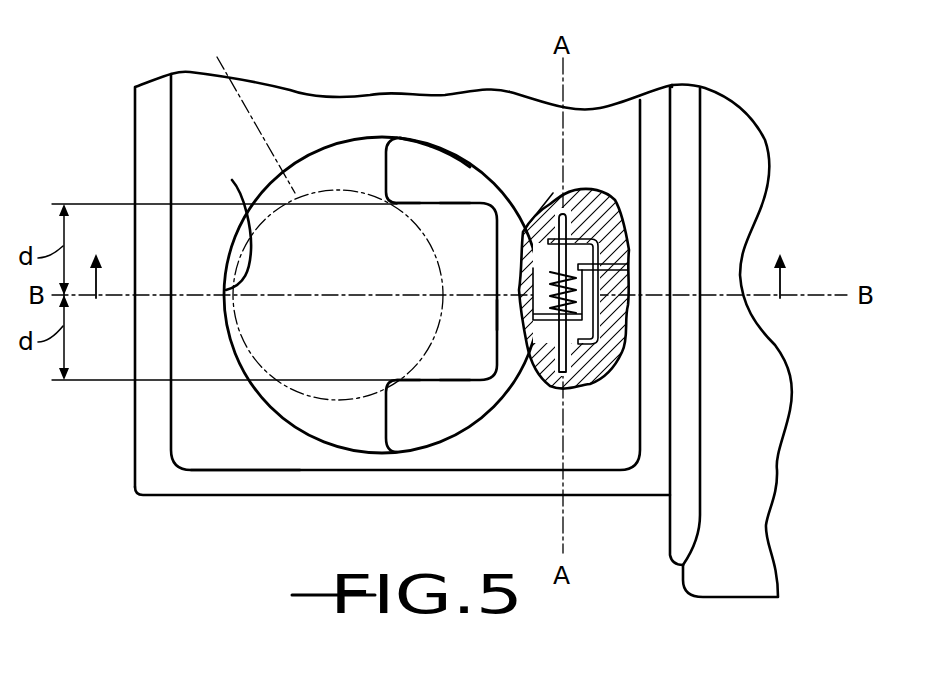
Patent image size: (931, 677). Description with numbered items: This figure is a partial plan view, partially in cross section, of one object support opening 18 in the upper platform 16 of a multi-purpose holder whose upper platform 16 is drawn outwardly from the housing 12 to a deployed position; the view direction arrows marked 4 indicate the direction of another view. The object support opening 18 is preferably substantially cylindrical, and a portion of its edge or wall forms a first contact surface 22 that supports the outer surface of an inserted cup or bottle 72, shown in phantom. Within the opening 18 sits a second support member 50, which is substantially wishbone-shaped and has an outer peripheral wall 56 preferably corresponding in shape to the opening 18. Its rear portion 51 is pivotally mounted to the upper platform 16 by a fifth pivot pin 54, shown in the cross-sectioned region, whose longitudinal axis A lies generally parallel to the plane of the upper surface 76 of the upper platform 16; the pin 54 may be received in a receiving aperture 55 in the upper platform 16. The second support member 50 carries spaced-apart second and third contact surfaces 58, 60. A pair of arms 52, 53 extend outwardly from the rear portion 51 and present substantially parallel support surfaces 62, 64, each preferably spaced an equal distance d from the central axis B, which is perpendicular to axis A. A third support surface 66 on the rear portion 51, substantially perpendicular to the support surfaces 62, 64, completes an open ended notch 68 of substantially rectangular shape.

The housing 12 is at (727, 599).
The upper platform 16 is at (203, 496).
The object support opening 18 is at (320, 143).
The first contact surface 22 is at (232, 180).
The second support member 50 is at (443, 138).
The rear portion 51 is at (625, 312).
The arm 52 is at (446, 186).
The arm 53 is at (446, 425).
The fifth pivot pin 54 is at (567, 374).
The receiving aperture 55 is at (553, 193).
The outer peripheral wall 56 is at (414, 138).
The second contact surface 58 is at (397, 205).
The third contact surface 60 is at (397, 380).
The support surface 62 is at (450, 204).
The support surface 64 is at (447, 377).
The third support surface 66 is at (497, 322).
The open ended notch 68 is at (457, 280).
The bottle 72 is at (217, 57).
The upper surface 76 is at (236, 439).
The view direction arrow 4 is at (438, 293).